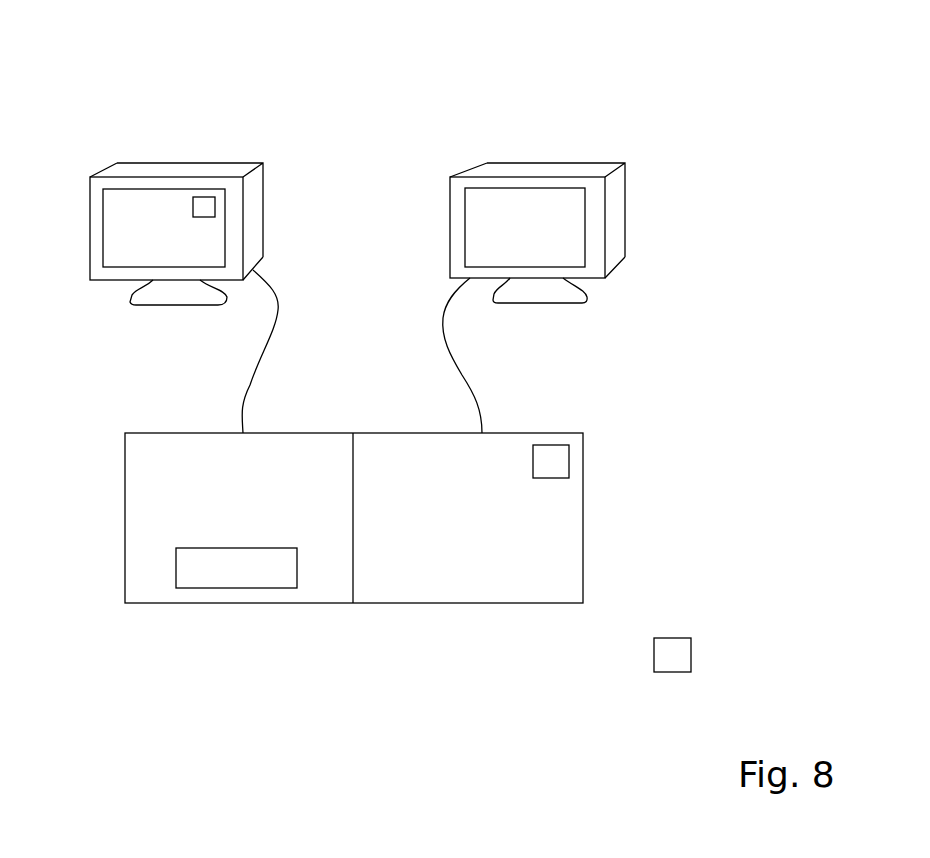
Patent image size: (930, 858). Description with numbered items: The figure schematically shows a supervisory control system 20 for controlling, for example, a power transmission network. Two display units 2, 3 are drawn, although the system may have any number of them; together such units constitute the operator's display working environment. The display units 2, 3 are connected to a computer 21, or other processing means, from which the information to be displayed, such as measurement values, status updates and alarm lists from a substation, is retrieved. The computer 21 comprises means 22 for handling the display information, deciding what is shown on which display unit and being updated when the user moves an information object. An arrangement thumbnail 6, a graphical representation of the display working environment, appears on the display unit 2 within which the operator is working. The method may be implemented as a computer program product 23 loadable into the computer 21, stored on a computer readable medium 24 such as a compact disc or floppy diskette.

The supervisory control system 20 is at (703, 81).
The display unit 2 is at (137, 203).
The arrangement thumbnail 6 is at (215, 205).
The display unit 3 is at (553, 207).
The computer 21 is at (568, 542).
The means for handling the display information 22 is at (222, 568).
The computer program product 23 is at (557, 463).
The computer readable medium 24 is at (680, 658).